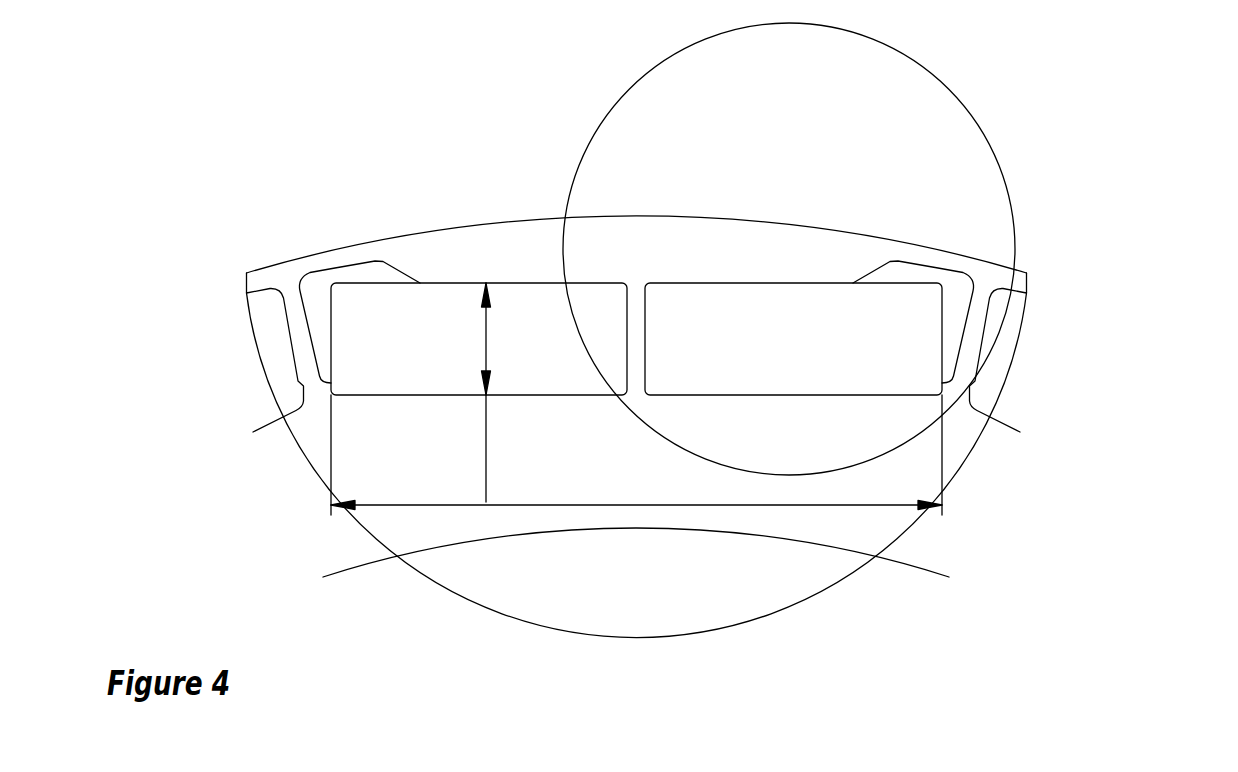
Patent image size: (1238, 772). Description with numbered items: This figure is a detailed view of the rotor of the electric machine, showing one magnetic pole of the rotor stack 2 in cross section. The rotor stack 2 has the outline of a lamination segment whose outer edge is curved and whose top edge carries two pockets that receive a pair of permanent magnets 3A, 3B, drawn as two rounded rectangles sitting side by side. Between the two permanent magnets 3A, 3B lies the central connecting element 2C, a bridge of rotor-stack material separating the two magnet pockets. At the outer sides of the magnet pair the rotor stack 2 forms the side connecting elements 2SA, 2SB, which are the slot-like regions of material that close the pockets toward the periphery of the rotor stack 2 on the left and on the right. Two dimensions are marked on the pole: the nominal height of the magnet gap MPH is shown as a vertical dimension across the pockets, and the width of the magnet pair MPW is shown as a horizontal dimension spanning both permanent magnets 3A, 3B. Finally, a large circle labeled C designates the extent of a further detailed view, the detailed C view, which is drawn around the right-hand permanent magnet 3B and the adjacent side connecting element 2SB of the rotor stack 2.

The rotor stack 2 is at (300, 475).
The side connecting element 2SA is at (300, 338).
The side connecting element 2SB is at (973, 335).
The central connecting element 2C is at (633, 337).
The permanent magnet 3A is at (393, 335).
The permanent magnet 3B is at (828, 352).
The detailed C view C is at (789, 249).
The nominal height of the magnet gap MPH is at (467, 392).
The width of the magnet pair MPW is at (636, 455).